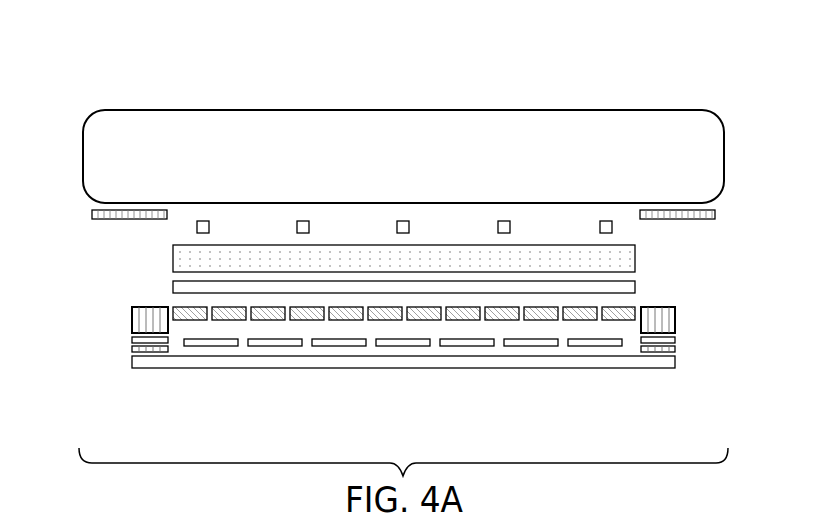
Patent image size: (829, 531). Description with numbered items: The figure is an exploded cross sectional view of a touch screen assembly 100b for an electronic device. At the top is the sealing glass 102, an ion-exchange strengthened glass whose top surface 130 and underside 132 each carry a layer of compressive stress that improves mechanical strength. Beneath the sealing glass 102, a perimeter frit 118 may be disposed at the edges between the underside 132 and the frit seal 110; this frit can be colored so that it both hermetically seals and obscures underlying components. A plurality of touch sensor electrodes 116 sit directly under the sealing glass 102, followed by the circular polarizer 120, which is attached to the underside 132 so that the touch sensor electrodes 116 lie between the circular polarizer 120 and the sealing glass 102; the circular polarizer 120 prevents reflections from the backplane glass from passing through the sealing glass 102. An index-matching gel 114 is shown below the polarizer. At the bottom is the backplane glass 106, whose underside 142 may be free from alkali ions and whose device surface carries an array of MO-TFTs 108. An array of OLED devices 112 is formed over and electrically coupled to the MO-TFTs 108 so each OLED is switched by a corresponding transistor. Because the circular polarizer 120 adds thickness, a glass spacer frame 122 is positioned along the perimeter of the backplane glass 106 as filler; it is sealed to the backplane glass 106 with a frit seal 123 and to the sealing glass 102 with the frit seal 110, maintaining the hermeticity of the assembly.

The touch screen assembly 100b is at (682, 73).
The sealing glass 102 is at (740, 147).
The backplane glass 106 is at (566, 383).
The array of MO-TFTs 108 is at (272, 346).
The frit seal 110 is at (676, 312).
The array of OLED devices 112 is at (193, 316).
The index-matching gel 114 is at (173, 288).
The touch sensor electrodes 116 is at (410, 226).
The perimeter frit 118 is at (92, 214).
The circular polarizer 120 is at (636, 262).
The glass spacer frame 122 is at (676, 340).
The frit seal 123 is at (676, 349).
The top surface 130 is at (222, 110).
The underside 132 is at (227, 204).
The underside 142 is at (657, 368).